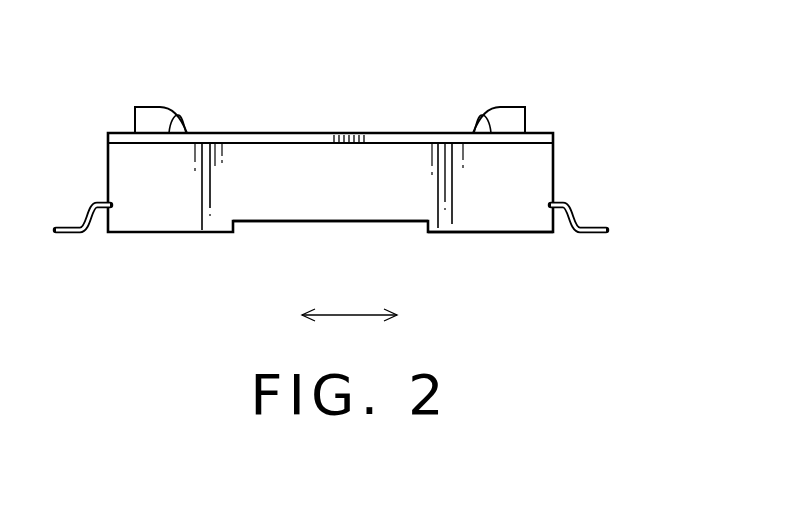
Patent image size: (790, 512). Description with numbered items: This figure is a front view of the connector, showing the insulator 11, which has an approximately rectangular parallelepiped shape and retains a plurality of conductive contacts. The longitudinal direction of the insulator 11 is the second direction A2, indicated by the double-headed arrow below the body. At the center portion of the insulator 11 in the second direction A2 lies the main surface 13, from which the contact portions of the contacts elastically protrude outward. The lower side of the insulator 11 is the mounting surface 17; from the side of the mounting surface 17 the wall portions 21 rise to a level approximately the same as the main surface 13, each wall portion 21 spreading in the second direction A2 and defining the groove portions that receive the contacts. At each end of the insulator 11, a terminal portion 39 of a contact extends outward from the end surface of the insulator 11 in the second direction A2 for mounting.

The insulator 11 is at (553, 158).
The main surface 13 is at (350, 133).
The mounting surface 17 is at (475, 233).
The wall portion 21 is at (342, 204).
The terminal portion 39 is at (590, 226).
The second direction A2 is at (360, 316).